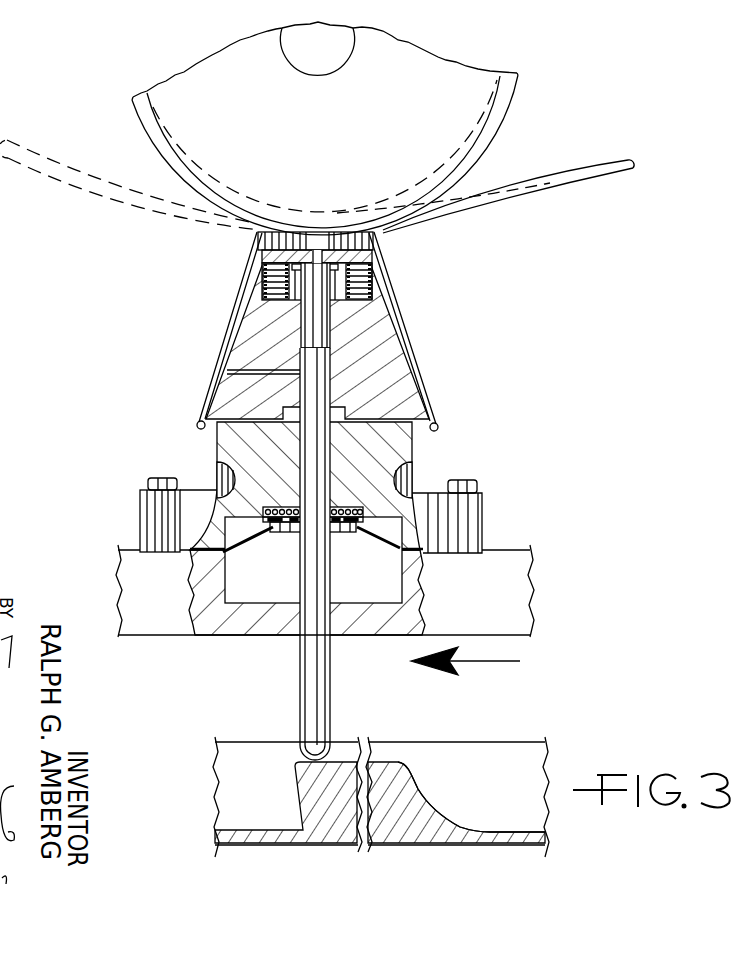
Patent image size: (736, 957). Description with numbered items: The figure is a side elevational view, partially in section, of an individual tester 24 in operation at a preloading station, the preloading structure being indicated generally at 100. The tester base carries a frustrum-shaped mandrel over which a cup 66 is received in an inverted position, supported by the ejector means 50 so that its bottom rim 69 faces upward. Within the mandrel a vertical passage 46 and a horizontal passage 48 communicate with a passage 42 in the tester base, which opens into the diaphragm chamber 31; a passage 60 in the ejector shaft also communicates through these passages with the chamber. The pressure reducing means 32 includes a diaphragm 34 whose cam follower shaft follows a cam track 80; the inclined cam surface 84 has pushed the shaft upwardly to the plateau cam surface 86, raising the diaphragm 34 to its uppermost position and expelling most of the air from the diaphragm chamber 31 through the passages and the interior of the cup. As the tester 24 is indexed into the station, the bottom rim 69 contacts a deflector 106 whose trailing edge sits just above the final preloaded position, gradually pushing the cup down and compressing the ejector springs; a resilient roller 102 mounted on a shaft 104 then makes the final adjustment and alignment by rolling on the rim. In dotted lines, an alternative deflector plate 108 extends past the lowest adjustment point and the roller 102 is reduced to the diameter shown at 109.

The individual tester 24 is at (462, 438).
The diaphragm chamber 31 is at (270, 579).
The pressure reducing means 32 is at (272, 652).
The diaphragm 34 is at (387, 545).
The passage 42 is at (315, 458).
The vertical passage 46 is at (395, 378).
The horizontal passage 48 is at (250, 375).
The ejector means 50 is at (228, 272).
The passage 60 is at (316, 321).
The cup 66 is at (410, 274).
The bottom rim 69 is at (372, 231).
The cam track 80 is at (215, 800).
The inclined cam surface 84 is at (442, 818).
The plateau cam surface 86 is at (383, 762).
The cup assembly 100 is at (104, 122).
The roller 102 is at (504, 71).
The shaft 104 is at (404, 43).
The deflector 106 is at (559, 200).
The deflector plate 108 is at (83, 198).
The reduced-diameter roller 109 is at (227, 190).